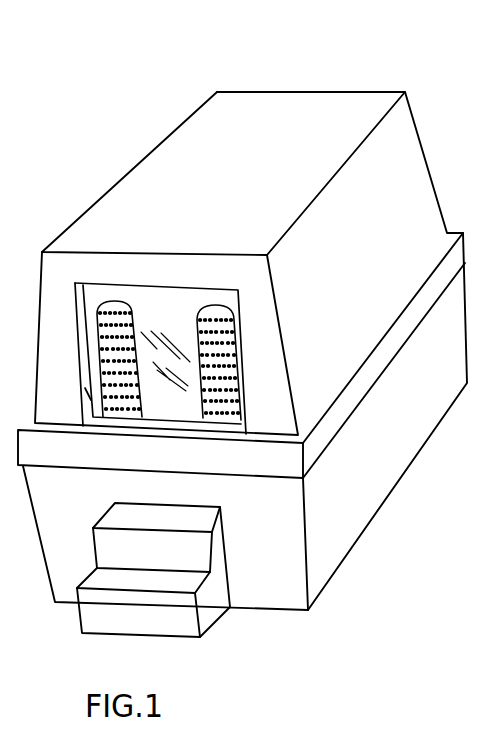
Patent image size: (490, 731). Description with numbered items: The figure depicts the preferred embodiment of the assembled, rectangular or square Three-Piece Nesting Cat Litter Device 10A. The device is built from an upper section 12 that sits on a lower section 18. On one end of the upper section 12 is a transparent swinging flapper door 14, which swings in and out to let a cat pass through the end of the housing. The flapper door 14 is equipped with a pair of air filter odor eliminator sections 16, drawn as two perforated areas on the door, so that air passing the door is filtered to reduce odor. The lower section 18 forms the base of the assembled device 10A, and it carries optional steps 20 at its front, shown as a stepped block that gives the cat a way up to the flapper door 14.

The Three-Piece Nesting Cat Litter Device 10A is at (152, 113).
The upper section 12 is at (275, 130).
The transparent swinging flapper door 14 is at (173, 312).
The air filter odor eliminator sections 16 is at (100, 340).
The lower section 18 is at (373, 447).
The steps 20 is at (182, 620).